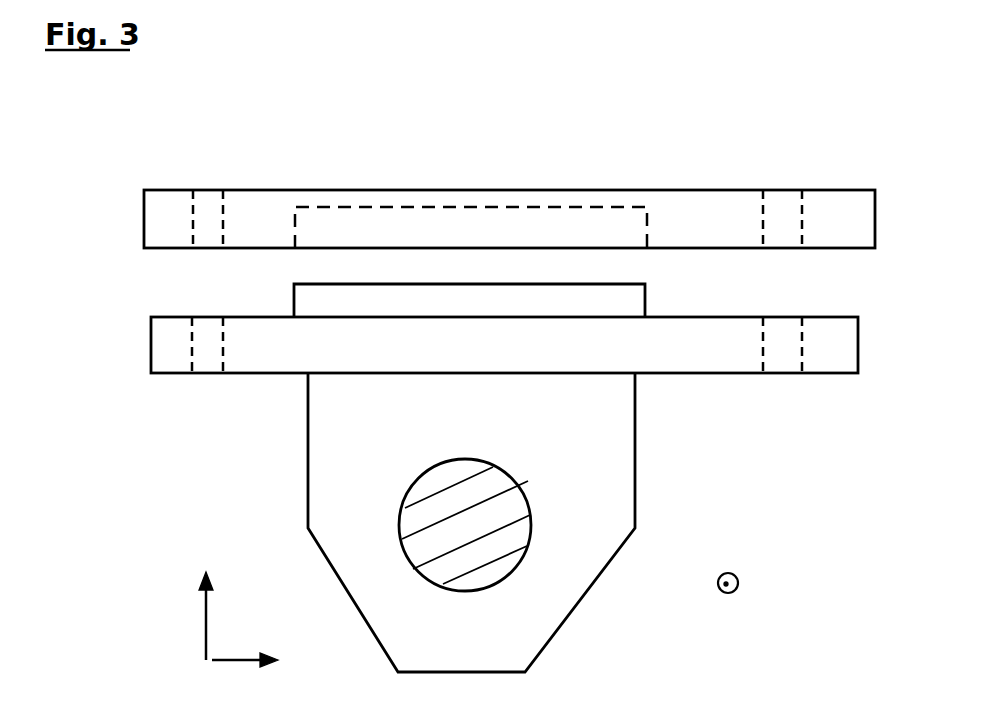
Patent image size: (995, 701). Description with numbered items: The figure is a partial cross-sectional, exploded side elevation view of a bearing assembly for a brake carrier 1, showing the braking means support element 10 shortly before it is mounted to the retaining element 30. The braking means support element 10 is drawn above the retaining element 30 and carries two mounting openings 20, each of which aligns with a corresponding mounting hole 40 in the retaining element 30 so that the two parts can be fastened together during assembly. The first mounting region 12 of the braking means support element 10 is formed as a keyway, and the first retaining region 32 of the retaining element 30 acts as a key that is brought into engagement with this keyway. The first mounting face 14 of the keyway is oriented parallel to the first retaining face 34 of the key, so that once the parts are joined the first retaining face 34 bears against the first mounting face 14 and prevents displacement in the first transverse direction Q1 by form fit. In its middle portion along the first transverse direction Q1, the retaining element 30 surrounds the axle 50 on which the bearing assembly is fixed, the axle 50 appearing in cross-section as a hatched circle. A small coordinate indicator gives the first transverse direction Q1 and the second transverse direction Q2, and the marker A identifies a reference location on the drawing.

The brake carrier 1 is at (601, 150).
The braking means support element 10 is at (676, 215).
The first mounting region 12 is at (467, 222).
The first mounting face 14 is at (300, 225).
The mounting openings 20 is at (207, 212).
The retaining element 30 is at (602, 483).
The first retaining region 32 is at (545, 302).
The first retaining face 34 is at (293, 305).
The mounting hole 40 is at (205, 357).
The axle 50 is at (493, 550).
The first transverse direction Q1 is at (240, 660).
The second transverse direction Q2 is at (202, 620).
The axis point A is at (736, 590).